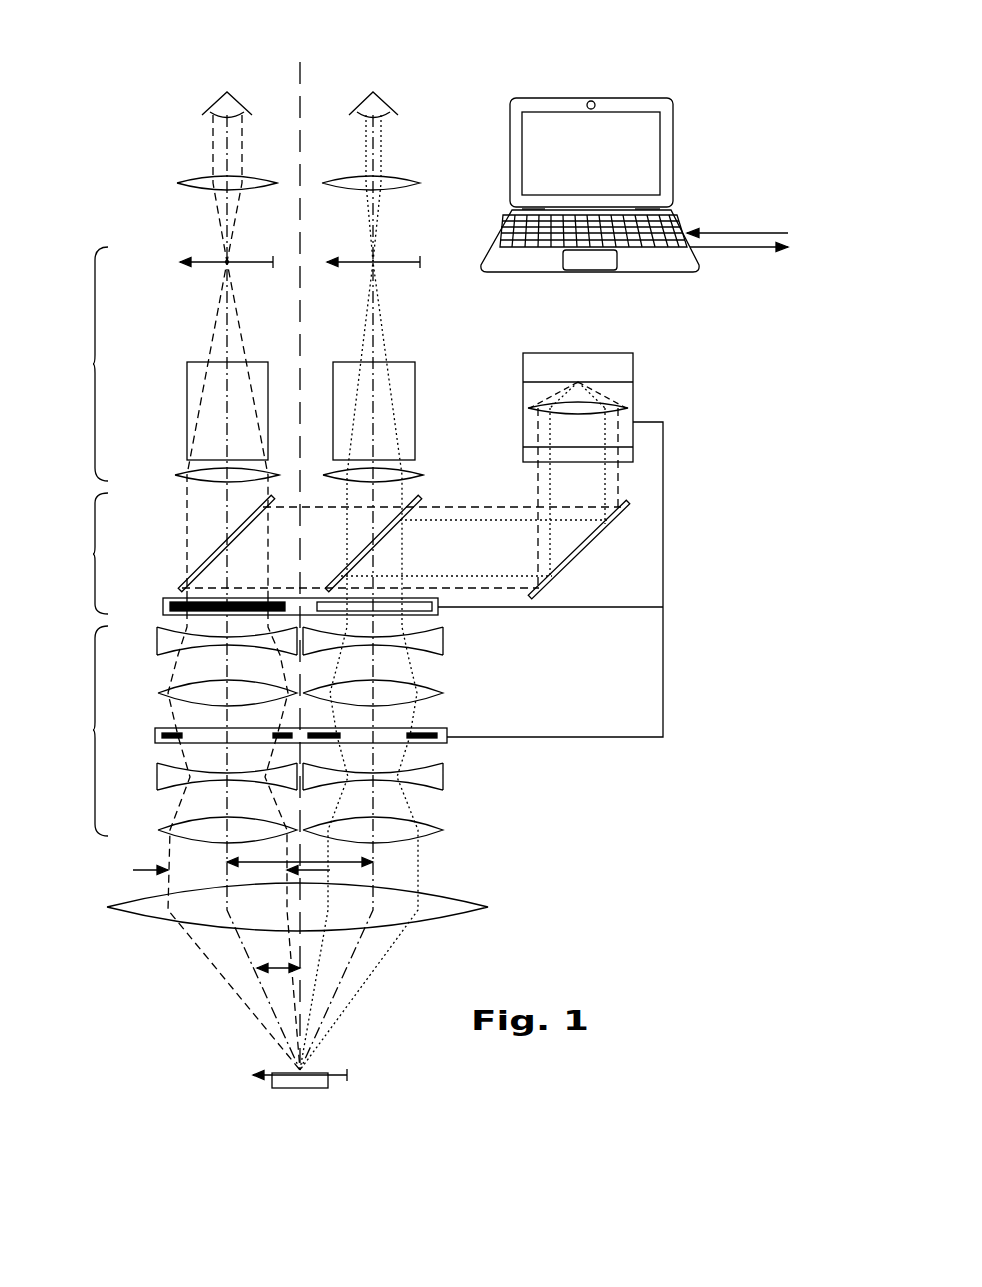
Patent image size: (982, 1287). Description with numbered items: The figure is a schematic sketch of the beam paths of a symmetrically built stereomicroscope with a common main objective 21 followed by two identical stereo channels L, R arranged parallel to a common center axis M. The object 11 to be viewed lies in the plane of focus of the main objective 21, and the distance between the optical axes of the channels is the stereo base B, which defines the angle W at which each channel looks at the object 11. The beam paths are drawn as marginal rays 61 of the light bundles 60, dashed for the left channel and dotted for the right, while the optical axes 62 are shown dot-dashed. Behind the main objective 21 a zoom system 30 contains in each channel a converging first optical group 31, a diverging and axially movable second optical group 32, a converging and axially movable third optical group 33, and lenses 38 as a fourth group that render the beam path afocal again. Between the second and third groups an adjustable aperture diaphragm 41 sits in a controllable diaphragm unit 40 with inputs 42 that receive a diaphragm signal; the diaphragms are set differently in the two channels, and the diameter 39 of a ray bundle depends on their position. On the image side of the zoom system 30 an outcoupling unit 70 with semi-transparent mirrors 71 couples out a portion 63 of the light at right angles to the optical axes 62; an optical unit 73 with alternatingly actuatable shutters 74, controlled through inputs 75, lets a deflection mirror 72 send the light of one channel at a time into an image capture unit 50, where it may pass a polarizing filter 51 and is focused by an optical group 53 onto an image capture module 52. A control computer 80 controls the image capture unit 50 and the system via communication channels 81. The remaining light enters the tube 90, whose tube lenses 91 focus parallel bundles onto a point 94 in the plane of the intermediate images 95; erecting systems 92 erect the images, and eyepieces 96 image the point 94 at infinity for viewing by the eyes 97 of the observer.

The object 11 is at (333, 1080).
The main objective 21 is at (467, 903).
The zoom system 30 is at (79, 731).
The first optical group 31 is at (433, 830).
The second optical group 32 is at (442, 767).
The third optical group 33 is at (433, 697).
The lenses (fourth optical group) 38 is at (442, 633).
The diameter of a ray bundle 39 is at (133, 870).
The diaphragm unit 40 is at (177, 745).
The adjustable aperture diaphragm 41 is at (170, 730).
The inputs of diaphragm unit 42 is at (500, 737).
The image capture unit 50 is at (630, 383).
The polarizing filter 51 is at (630, 455).
The image capture module 52 is at (630, 367).
The optical group of image capture unit 53 is at (628, 410).
The light bundle 60 is at (250, 990).
The marginal rays 61 is at (295, 1030).
The optical axis 62 is at (225, 140).
The outcoupled portion of light 63 is at (502, 537).
The outcoupling unit 70 is at (79, 553).
The semi-transparent mirror 71 is at (202, 567).
The deflection mirror 72 is at (618, 517).
The optical unit 73 is at (180, 600).
The shutter 74 is at (178, 612).
The inputs of optical unit 75 is at (550, 607).
The control computer 80 is at (687, 200).
The communication channels 81 is at (737, 240).
The tube 90 is at (79, 364).
The tube lens 91 is at (417, 473).
The erecting system 92 is at (405, 362).
The point 94 is at (225, 265).
The intermediate image 95 is at (210, 260).
The eyepiece 96 is at (417, 183).
The eyes 97 is at (380, 104).
The left stereo channel L is at (227, 87).
The right stereo channel R is at (373, 87).
The center axis M is at (302, 93).
The stereo base B is at (332, 862).
The angle W is at (290, 958).